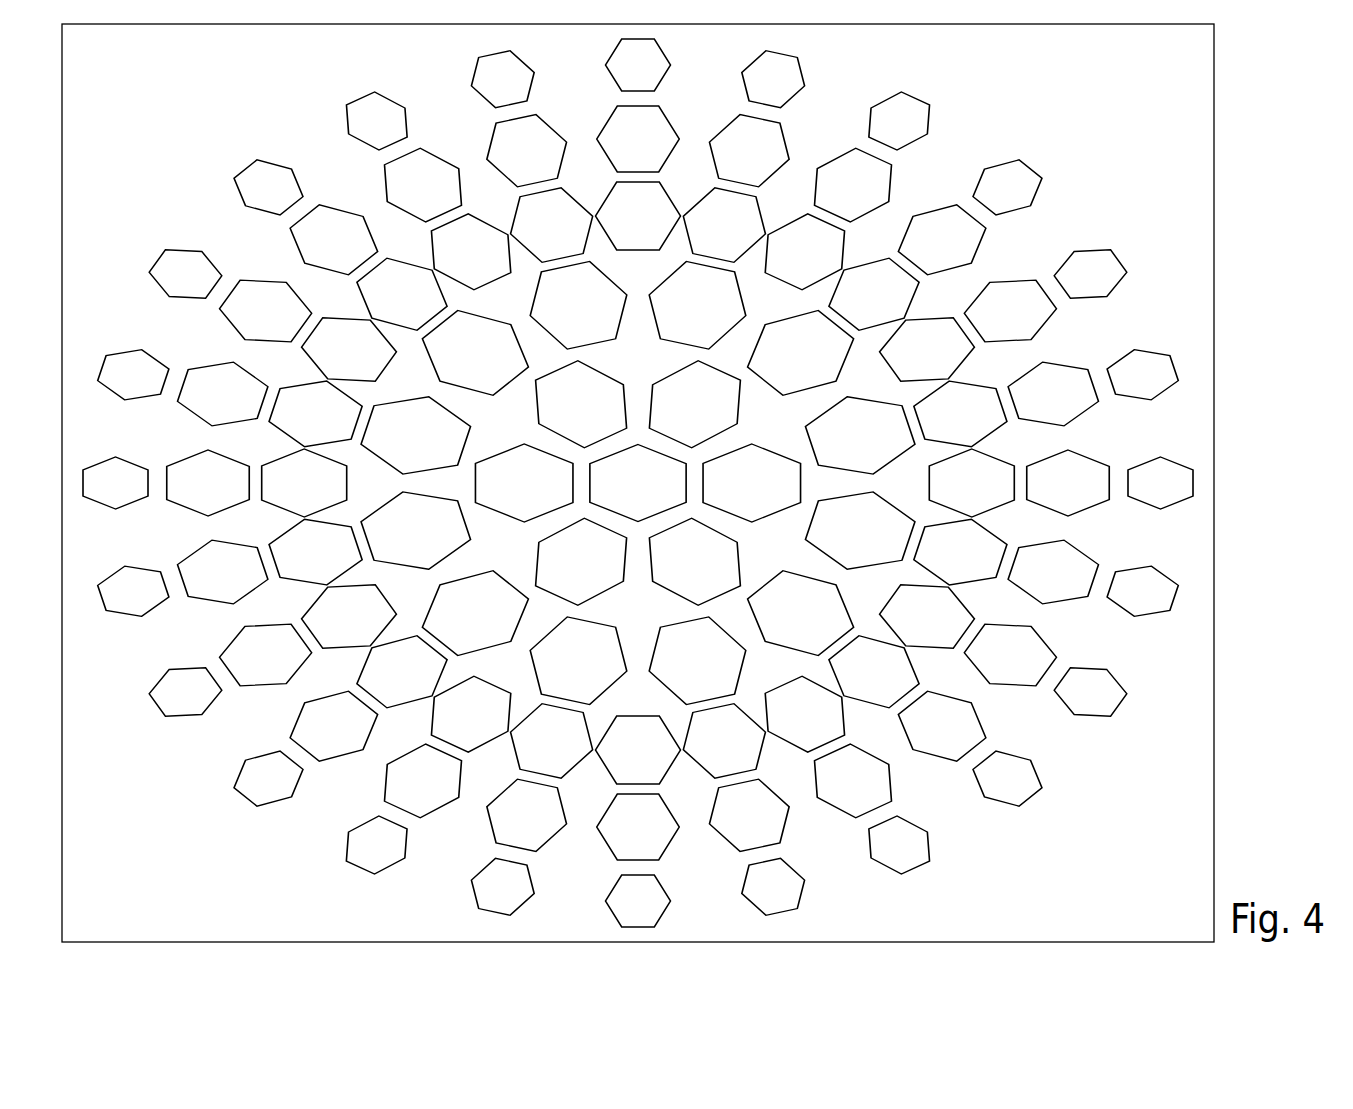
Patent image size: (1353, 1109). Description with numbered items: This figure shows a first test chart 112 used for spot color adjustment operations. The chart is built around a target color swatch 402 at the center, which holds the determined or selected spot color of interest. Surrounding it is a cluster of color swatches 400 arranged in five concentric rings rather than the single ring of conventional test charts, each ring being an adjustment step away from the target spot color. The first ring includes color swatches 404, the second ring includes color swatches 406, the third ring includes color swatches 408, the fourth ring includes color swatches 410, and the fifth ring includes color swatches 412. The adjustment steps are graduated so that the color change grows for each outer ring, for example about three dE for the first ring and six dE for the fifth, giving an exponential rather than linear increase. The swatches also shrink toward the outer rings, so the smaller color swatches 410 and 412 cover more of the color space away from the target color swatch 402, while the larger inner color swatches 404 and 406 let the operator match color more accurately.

The color swatches 400 is at (1215, 56).
The first test chart 112 is at (1262, 842).
The target color swatch 402 is at (638, 483).
The color swatches (first ring) 404 is at (637, 483).
The color swatches (second ring) 406 is at (638, 482).
The color swatches (third ring) 408 is at (638, 483).
The color swatches (fourth ring) 410 is at (638, 483).
The color swatches (fifth ring) 412 is at (638, 483).